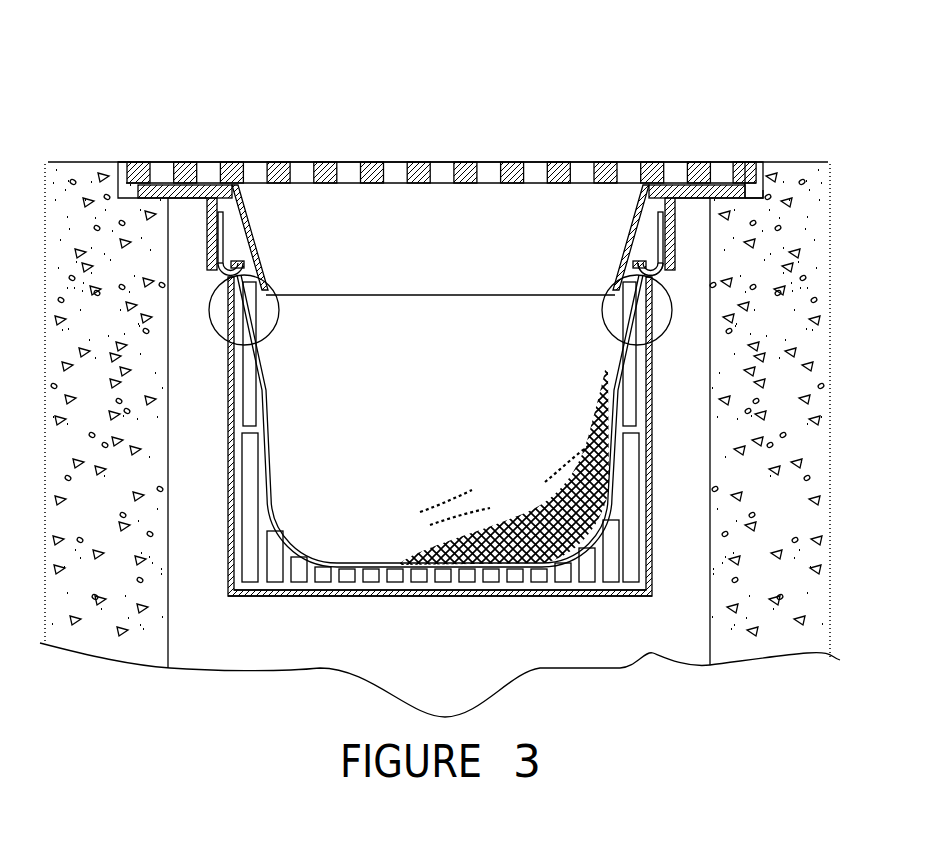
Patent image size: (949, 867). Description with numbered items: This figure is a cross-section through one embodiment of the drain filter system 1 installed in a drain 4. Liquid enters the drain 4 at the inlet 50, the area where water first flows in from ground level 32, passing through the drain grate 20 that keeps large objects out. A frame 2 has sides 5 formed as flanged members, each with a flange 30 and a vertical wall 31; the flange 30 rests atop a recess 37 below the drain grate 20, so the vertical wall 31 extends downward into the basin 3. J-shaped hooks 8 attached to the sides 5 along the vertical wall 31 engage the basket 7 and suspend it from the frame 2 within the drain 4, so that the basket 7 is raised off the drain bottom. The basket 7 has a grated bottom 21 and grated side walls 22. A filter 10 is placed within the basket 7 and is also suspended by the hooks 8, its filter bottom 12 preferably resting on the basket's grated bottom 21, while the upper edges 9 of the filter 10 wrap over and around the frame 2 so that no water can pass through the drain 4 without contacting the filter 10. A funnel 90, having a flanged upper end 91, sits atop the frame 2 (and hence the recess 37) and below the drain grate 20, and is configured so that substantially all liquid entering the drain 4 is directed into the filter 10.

The drain filter system 1 is at (258, 628).
The frame 2 is at (481, 144).
The basin 3 is at (550, 442).
The drain 4 is at (466, 120).
The sides 5 is at (205, 222).
The basket 7 is at (484, 597).
The hooks 8 is at (565, 442).
The upper edges 9 is at (440, 186).
The filter 10 is at (393, 414).
The filter bottom 12 is at (345, 568).
The drain grate 20 is at (742, 180).
The grated bottom 21 is at (407, 597).
The grated side walls 22 is at (262, 548).
The flange 30 is at (712, 192).
The vertical wall 31 is at (668, 250).
The ground level 32 is at (807, 168).
The recess 37 is at (753, 202).
The inlet 50 is at (112, 148).
The funnel 90 is at (468, 256).
The flanged upper end 91 is at (165, 190).